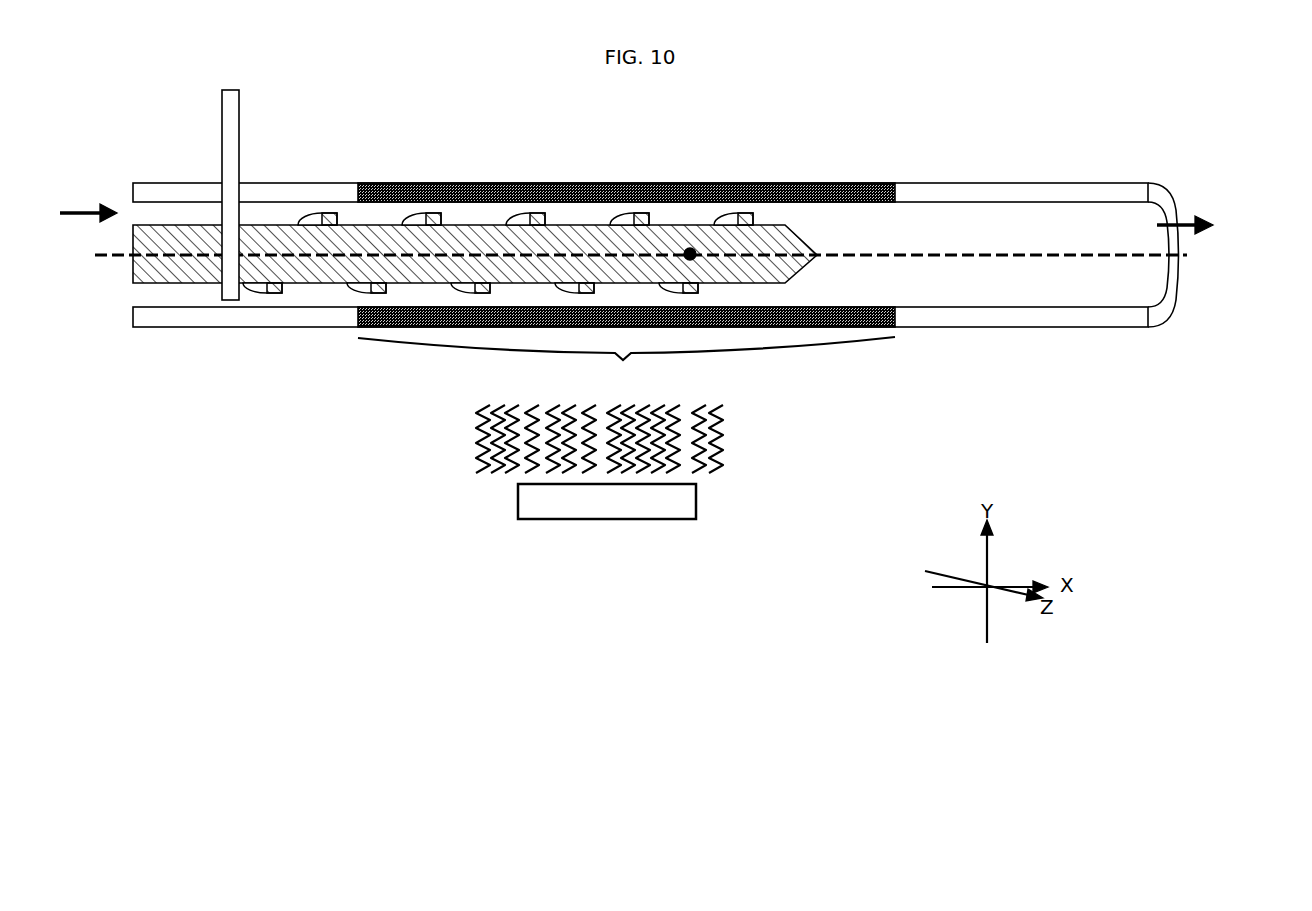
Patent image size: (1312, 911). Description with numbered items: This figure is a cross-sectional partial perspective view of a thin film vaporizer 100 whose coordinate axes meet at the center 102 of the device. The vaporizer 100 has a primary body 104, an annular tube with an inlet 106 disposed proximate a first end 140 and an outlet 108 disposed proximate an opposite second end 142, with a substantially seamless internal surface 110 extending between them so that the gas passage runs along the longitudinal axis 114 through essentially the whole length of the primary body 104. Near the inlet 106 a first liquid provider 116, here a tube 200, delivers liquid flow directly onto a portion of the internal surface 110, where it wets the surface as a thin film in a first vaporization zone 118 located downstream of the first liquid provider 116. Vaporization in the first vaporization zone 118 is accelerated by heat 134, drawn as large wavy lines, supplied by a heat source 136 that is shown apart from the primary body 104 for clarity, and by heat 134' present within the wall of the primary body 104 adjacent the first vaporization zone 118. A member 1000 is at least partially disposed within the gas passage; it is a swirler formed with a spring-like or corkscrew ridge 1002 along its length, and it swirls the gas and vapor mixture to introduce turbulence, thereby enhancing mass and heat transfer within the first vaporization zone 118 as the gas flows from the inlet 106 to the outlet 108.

The vaporizer 100 is at (1190, 192).
The center 102 is at (690, 254).
The primary body 104 is at (968, 190).
The inlet 106 is at (125, 296).
The outlet 108 is at (1160, 292).
The internal surface 110 is at (1040, 297).
The longitudinal axis 114 is at (621, 257).
The first liquid provider 116 is at (246, 80).
The first vaporization zone 118 is at (626, 363).
The heat 134 is at (641, 439).
The heat 134' is at (639, 220).
The heat source 136 is at (607, 501).
The first end 140 is at (132, 187).
The second end 142 is at (1157, 312).
The tube 200 is at (229, 112).
The member 1000 is at (475, 259).
The corkscrew ridge 1002 is at (275, 295).